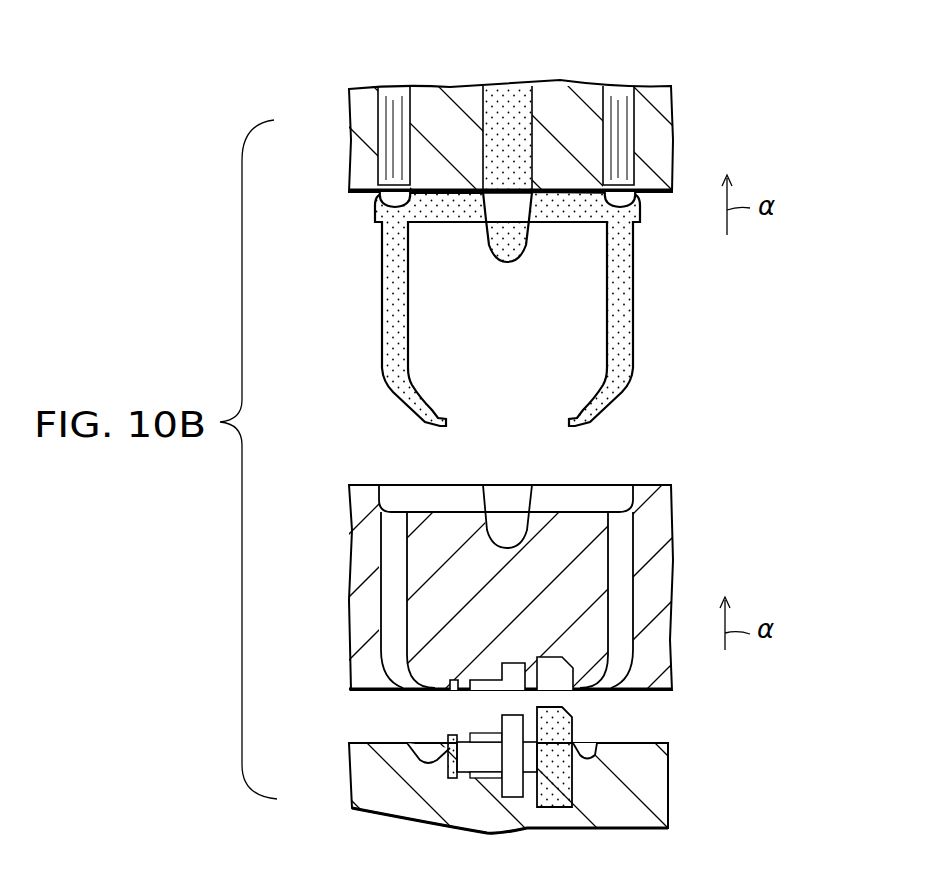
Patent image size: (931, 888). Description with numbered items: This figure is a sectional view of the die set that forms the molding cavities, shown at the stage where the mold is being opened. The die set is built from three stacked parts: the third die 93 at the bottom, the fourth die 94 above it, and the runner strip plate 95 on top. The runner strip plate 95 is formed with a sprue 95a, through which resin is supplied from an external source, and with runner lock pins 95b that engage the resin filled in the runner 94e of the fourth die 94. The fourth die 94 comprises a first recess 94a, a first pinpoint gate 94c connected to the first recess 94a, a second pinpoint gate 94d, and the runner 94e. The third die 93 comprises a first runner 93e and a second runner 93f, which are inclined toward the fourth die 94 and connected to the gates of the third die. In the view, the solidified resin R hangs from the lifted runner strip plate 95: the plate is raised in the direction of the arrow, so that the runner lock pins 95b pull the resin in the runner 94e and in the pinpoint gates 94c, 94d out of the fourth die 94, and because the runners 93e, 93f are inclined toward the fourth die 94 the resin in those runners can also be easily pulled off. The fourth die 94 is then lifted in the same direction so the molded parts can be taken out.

The runner strip plate 95 is at (660, 133).
The sprue 95a is at (540, 98).
The runner lock pin 95b is at (392, 97).
The resin molded body R is at (408, 308).
The fourth die 94 is at (653, 535).
The first recess 94a is at (452, 690).
The first pinpoint gate 94c is at (392, 592).
The second pinpoint gate 94d is at (622, 588).
The runner 94e is at (607, 482).
The third die 93 is at (650, 784).
The first runner 93e is at (432, 752).
The second runner 93f is at (600, 748).